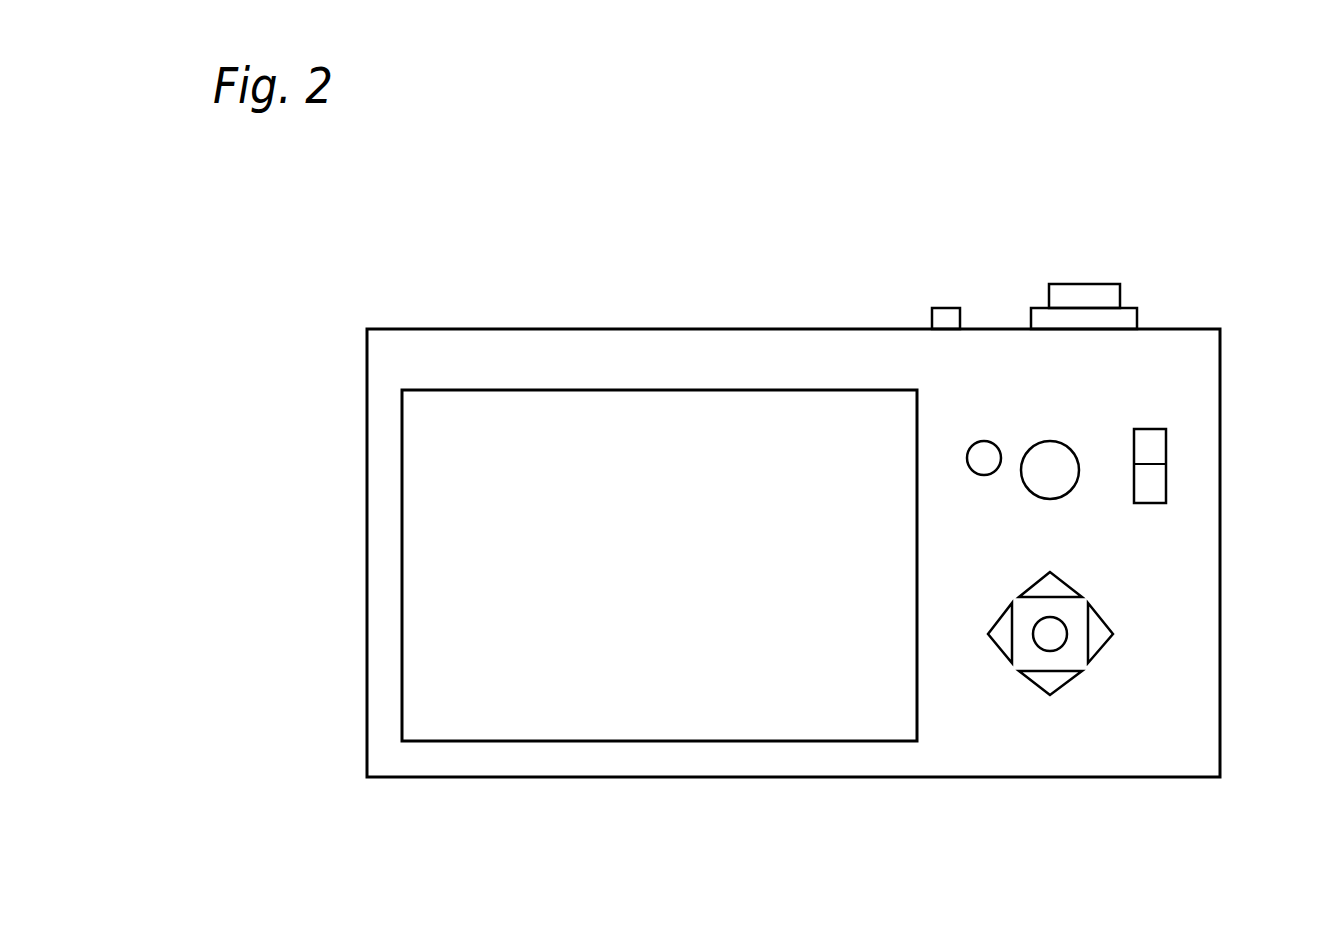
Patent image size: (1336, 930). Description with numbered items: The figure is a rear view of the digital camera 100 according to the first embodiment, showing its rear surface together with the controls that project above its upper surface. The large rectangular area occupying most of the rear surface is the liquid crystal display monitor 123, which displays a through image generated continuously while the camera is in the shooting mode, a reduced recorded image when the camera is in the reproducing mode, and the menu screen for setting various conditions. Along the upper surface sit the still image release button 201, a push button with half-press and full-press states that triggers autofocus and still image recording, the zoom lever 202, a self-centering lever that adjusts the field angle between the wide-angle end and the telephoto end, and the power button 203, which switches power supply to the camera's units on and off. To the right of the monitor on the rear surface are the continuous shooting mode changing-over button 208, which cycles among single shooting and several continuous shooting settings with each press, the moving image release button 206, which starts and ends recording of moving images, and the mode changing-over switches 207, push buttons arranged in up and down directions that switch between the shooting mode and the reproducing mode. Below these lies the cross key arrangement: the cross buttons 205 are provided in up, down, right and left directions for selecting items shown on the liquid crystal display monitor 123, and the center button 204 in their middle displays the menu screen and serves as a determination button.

The digital camera 100 is at (397, 188).
The liquid crystal display monitor 123 is at (499, 716).
The still image release button 201 is at (1107, 292).
The zoom lever 202 is at (1128, 320).
The power button 203 is at (933, 308).
The center button 204 is at (1052, 637).
The cross buttons 205 is at (1050, 680).
The moving image release button 206 is at (1075, 453).
The mode changing-over switches 207 is at (1143, 474).
The continuous shooting mode changing-over button 208 is at (1000, 447).